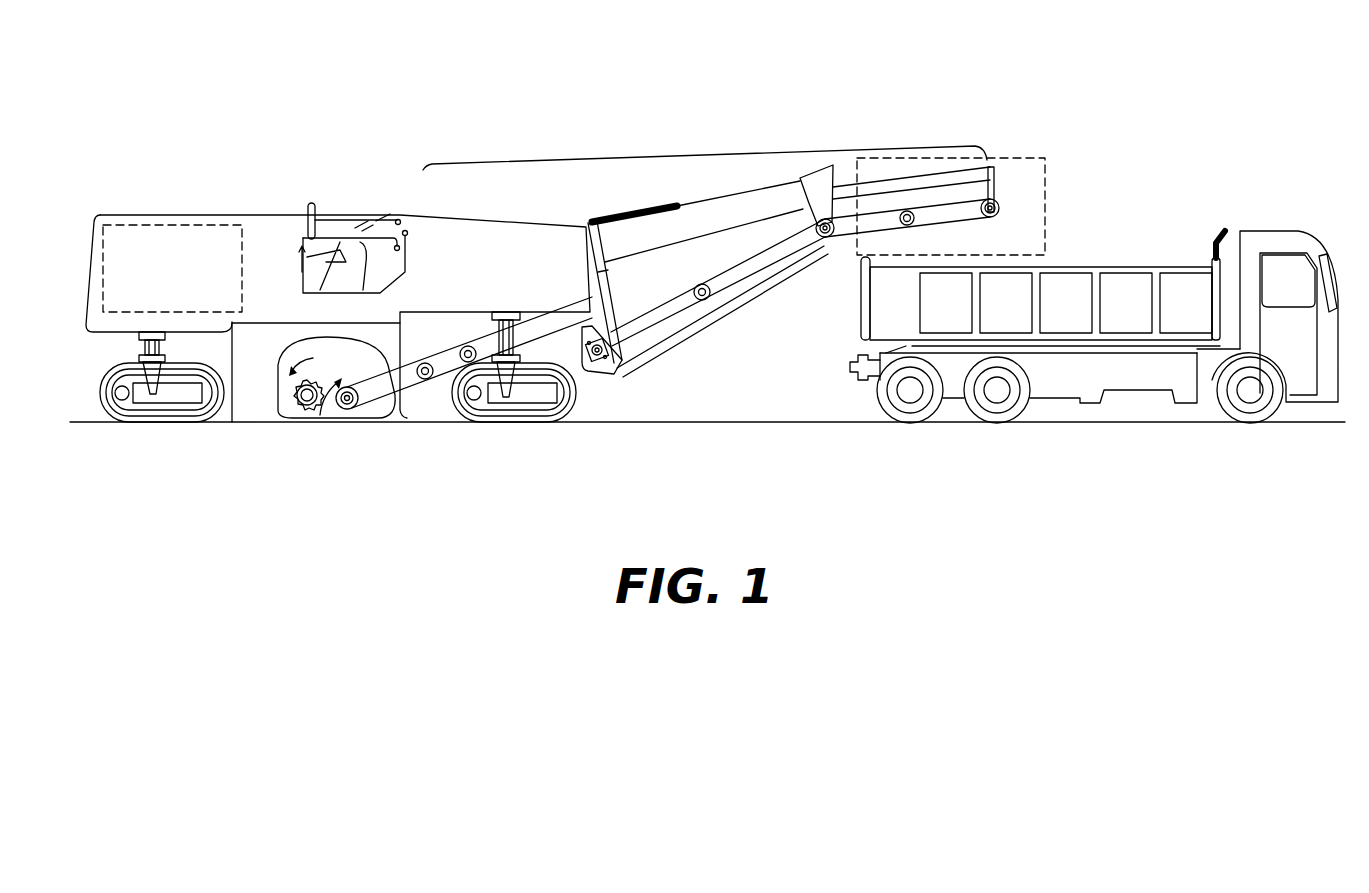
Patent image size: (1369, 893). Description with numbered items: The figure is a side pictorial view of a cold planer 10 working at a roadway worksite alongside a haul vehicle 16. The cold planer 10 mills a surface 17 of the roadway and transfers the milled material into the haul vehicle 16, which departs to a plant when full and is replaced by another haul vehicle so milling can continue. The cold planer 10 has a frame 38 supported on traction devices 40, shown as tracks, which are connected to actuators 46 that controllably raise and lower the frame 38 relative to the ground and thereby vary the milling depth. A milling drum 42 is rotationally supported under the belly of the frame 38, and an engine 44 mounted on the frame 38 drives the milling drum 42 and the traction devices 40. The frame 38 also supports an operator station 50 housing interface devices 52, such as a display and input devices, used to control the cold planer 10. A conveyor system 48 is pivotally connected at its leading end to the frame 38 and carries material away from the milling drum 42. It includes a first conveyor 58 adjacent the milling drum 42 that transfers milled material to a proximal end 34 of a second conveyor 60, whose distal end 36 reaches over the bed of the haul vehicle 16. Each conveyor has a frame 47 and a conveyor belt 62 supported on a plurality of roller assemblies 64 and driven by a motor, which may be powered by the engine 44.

The cold planer 10 is at (592, 78).
The haul vehicle 16 is at (1097, 205).
The surface 17 is at (683, 422).
The proximal end 34 is at (709, 290).
The distal end 36 is at (1013, 210).
The frame 38 is at (423, 230).
The traction devices 40 is at (223, 426).
The milling drum 42 is at (330, 418).
The engine 44 is at (125, 224).
The actuators 46 is at (137, 365).
The frame 47 is at (984, 173).
The conveyor system 48 is at (703, 150).
The operator station 50 is at (302, 160).
The interface devices 52 is at (354, 220).
The first conveyor 58 is at (409, 406).
The second conveyor 60 is at (770, 283).
The conveyor belt 62 is at (440, 358).
The roller assemblies 64 is at (701, 302).